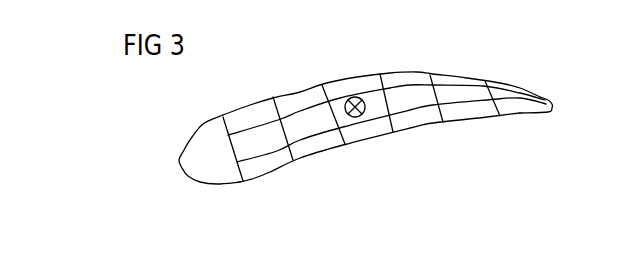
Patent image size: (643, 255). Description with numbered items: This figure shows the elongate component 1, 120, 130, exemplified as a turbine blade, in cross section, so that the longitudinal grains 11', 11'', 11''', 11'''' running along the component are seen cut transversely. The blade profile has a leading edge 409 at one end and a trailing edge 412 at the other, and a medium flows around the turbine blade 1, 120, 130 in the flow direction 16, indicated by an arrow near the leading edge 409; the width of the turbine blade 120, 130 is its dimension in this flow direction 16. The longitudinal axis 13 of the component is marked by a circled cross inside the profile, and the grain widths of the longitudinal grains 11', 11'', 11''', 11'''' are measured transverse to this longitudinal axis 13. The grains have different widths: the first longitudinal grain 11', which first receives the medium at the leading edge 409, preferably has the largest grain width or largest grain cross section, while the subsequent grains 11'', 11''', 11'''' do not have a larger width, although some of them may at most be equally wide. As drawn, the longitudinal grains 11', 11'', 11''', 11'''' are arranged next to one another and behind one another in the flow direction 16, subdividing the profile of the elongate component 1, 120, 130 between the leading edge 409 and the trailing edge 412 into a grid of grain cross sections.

The elongate component 1 is at (409, 127).
The turbine blade 120 is at (409, 127).
The turbine blade 130 is at (472, 143).
The first longitudinal grain 11' is at (199, 149).
The longitudinal grain 11'' is at (263, 109).
The longitudinal grain 11''' is at (386, 135).
The longitudinal grain 11'''' is at (391, 160).
The longitudinal axis 13 is at (352, 95).
The flow direction 16 is at (169, 169).
The leading edge 409 is at (195, 181).
The trailing edge 412 is at (553, 111).